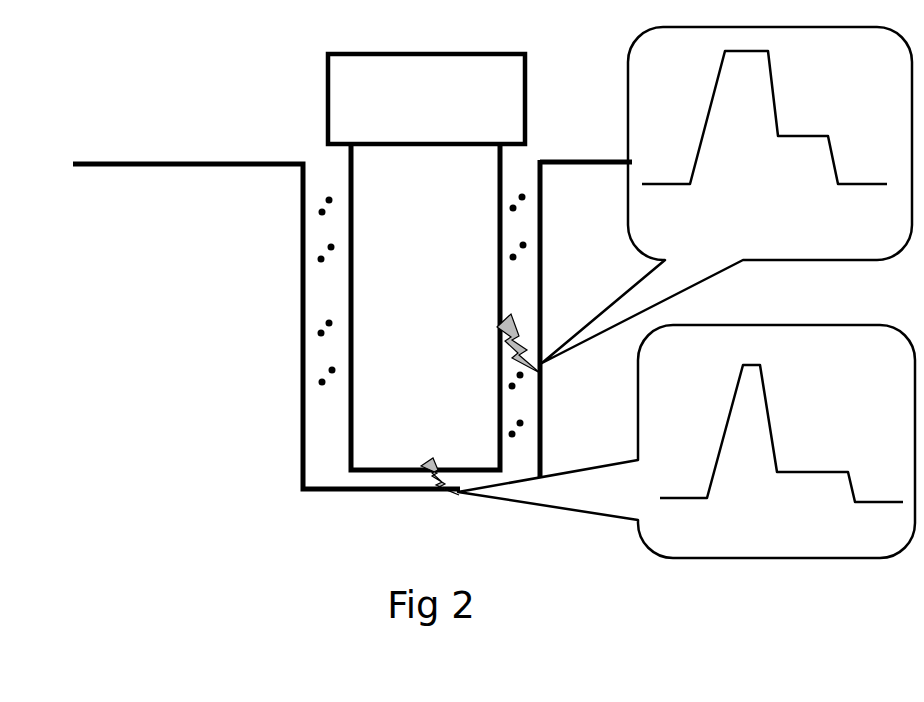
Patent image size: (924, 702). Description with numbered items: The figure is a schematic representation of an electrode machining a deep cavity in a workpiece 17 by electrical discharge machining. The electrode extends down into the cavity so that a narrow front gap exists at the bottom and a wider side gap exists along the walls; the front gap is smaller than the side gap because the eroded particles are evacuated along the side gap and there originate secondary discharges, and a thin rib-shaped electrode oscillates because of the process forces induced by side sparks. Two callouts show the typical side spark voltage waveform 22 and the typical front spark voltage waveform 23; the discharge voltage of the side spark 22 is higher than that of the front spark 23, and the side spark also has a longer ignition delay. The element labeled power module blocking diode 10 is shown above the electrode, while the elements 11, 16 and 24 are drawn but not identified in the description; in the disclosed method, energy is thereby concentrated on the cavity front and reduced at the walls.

The power module blocking diode 10 is at (426, 74).
The chamber wall 11 is at (352, 324).
The hollow cavity 16 is at (425, 307).
The workpiece 17 is at (116, 372).
The side spark voltage waveform 22 is at (727, 195).
The front spark voltage waveform 23 is at (686, 441).
The plasma particles 24 is at (420, 308).